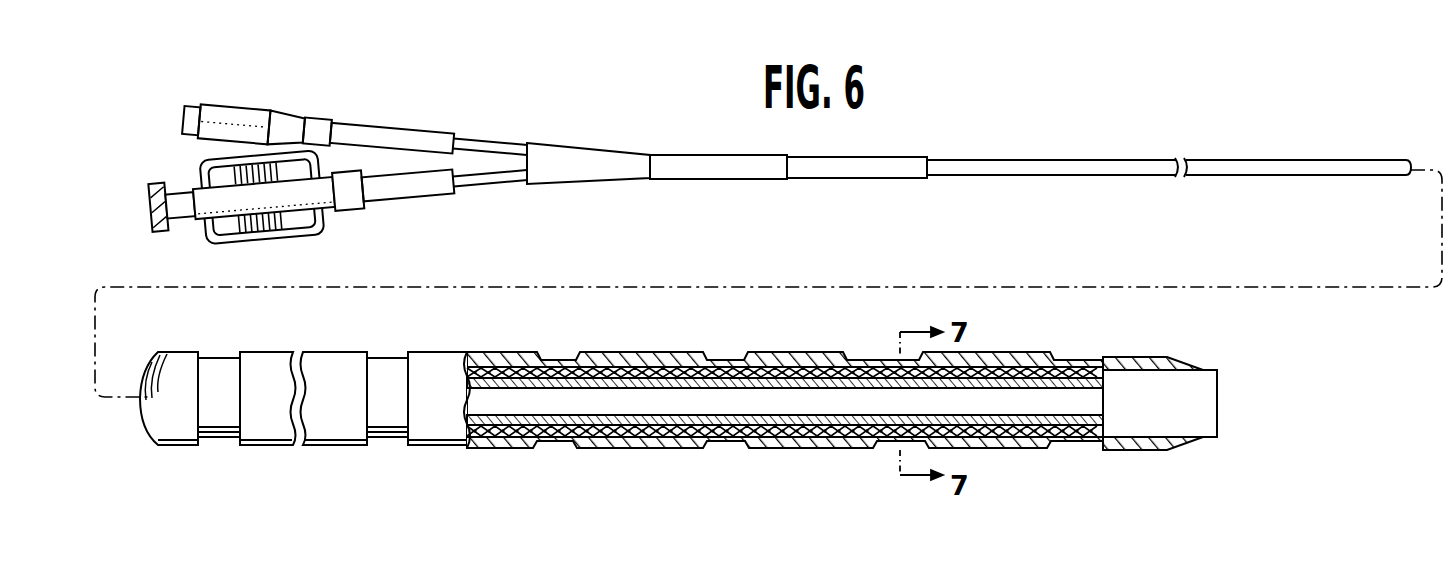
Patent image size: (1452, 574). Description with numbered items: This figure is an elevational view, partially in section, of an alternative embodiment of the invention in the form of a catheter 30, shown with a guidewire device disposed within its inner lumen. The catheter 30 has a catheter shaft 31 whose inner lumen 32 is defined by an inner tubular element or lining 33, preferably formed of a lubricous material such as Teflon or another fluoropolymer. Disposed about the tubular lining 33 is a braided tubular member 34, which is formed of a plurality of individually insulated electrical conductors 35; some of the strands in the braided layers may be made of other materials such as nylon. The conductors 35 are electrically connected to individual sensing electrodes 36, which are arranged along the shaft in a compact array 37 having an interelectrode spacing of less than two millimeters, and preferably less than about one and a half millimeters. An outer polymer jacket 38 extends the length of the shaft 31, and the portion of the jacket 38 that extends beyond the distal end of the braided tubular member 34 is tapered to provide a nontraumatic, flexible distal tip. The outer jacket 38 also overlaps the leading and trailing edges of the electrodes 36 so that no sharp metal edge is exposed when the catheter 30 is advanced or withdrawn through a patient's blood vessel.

The catheter 30 is at (1174, 120).
The catheter shaft 31 is at (1298, 168).
The inner lumen 32 is at (1103, 425).
The inner tubular element or lining 33 is at (1110, 378).
The braided tubular member 34 is at (800, 432).
The individually insulated electrical conductors 35 is at (803, 372).
The sensing electrodes 36 is at (208, 358).
The compact array 37 is at (1103, 498).
The outer polymer jacket 38 is at (633, 440).